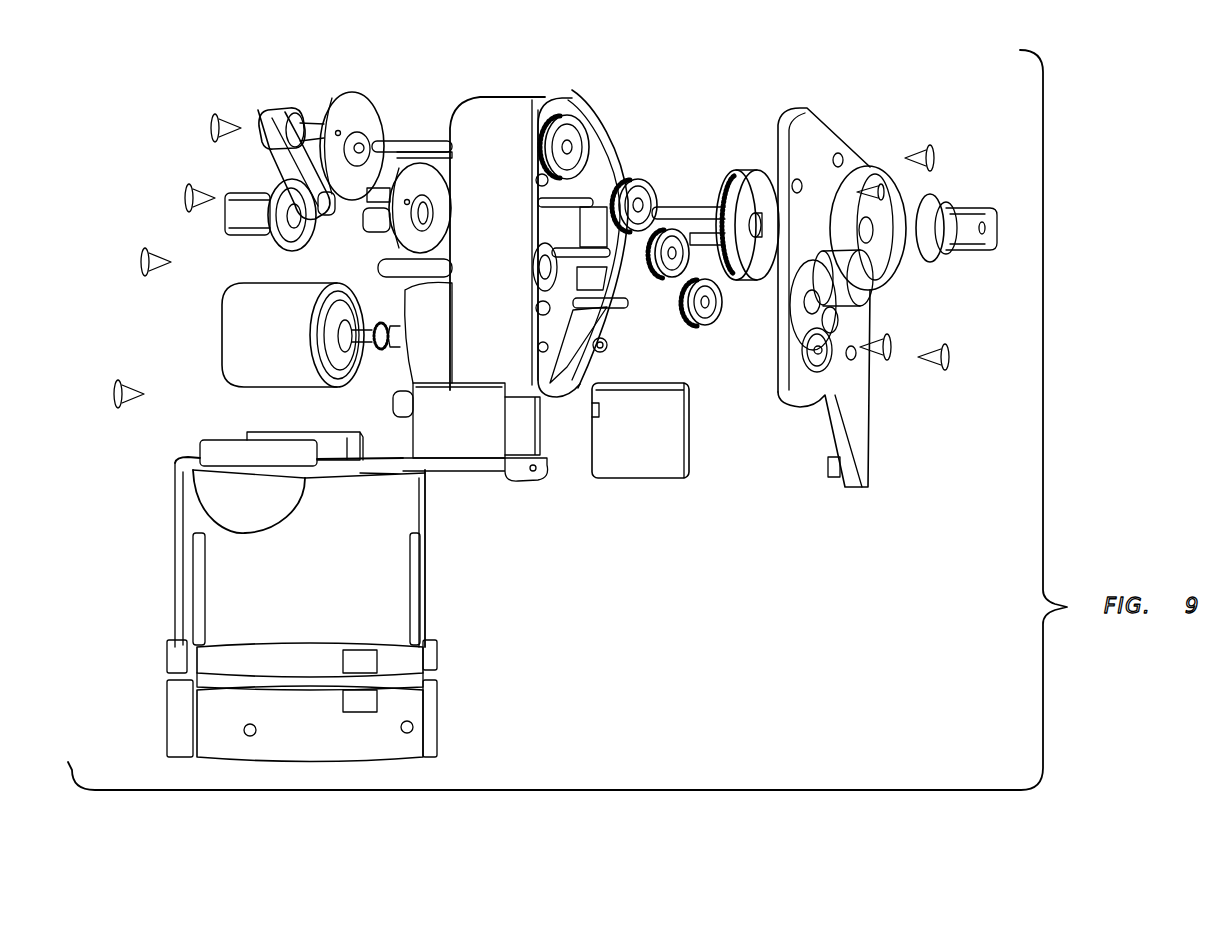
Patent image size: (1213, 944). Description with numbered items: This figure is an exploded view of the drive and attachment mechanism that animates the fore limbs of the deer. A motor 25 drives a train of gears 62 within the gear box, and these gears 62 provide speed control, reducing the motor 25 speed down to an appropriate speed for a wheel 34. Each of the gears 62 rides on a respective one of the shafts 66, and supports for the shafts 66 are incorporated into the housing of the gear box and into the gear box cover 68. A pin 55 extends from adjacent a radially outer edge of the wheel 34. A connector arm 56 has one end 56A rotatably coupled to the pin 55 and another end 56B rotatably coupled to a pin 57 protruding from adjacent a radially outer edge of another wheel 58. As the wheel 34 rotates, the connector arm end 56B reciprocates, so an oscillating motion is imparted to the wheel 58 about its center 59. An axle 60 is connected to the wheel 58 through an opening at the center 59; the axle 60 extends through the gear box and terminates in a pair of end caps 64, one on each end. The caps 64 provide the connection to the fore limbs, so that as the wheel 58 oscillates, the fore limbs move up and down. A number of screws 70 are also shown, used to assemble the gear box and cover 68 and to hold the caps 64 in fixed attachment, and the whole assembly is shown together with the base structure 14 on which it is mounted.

The base housing 14 is at (318, 601).
The motor 25 is at (283, 345).
The wheel 34 is at (347, 93).
The pin 55 is at (315, 118).
The connector arm 56 is at (260, 163).
The connector arm end 56A is at (283, 118).
The connector arm end 56B is at (340, 220).
The pin 57 is at (417, 170).
The wheel 58 is at (420, 168).
The center 59 is at (432, 220).
The axle 60 is at (600, 217).
The gears 62 is at (577, 140).
The end caps 64 is at (252, 244).
The shafts 66 is at (595, 290).
The gear box cover 68 is at (830, 131).
The screws 70 is at (208, 130).